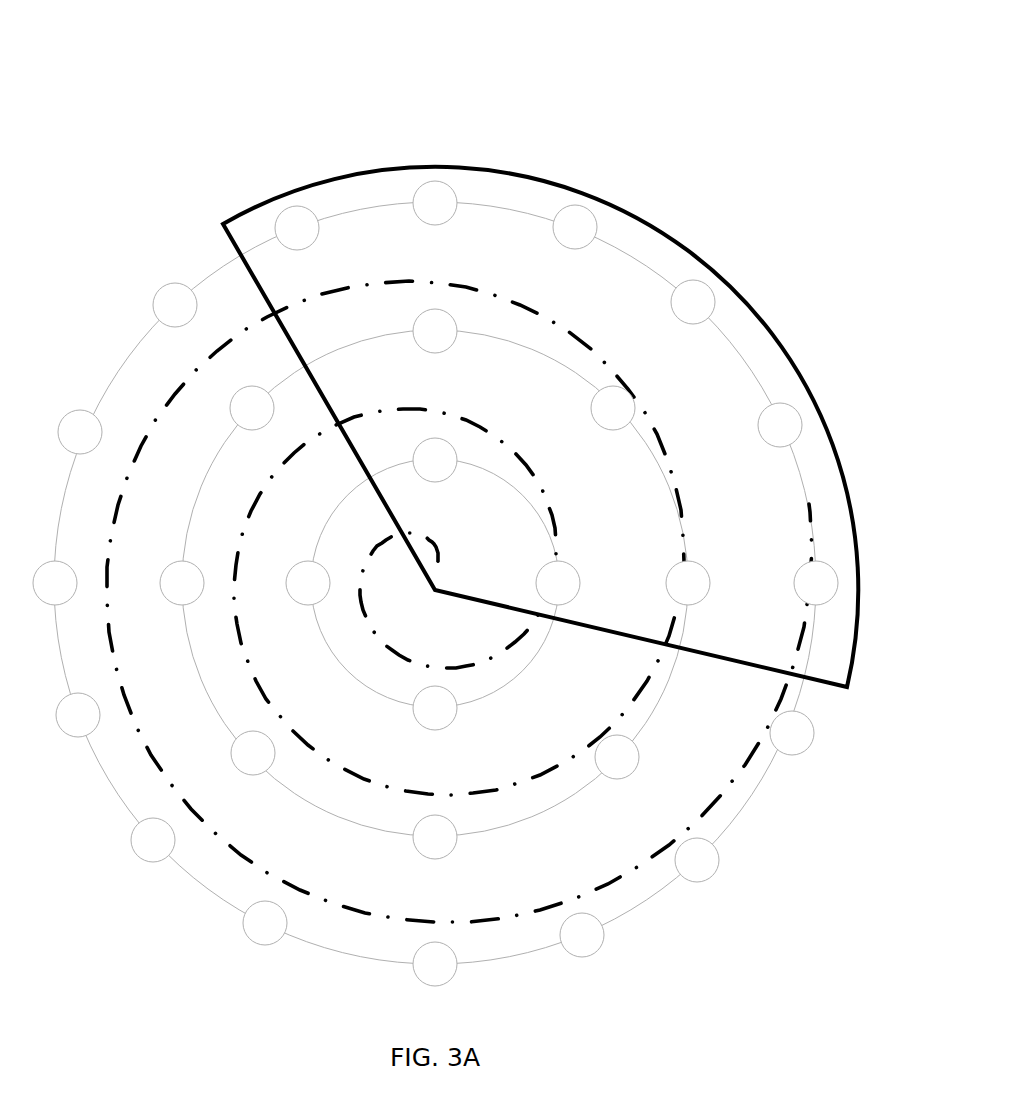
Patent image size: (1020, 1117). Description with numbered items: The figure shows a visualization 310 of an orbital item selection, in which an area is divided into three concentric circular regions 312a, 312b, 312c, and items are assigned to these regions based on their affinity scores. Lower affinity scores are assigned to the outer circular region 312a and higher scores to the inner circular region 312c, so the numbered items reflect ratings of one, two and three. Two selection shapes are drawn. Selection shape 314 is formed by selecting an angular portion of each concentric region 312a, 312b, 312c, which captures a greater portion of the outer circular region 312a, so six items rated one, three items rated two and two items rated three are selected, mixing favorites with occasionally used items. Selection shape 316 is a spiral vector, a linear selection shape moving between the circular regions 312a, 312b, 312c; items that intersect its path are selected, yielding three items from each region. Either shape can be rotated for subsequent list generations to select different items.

The visualization 310 is at (640, 123).
The outer circular region 312a is at (475, 705).
The circular region 312b is at (478, 832).
The inner circular region 312c is at (489, 961).
The selection shape 314 is at (694, 256).
The selection shape 316 is at (252, 850).